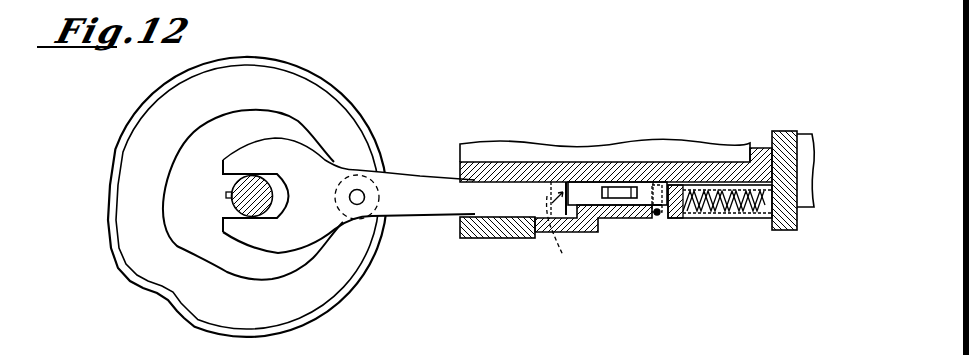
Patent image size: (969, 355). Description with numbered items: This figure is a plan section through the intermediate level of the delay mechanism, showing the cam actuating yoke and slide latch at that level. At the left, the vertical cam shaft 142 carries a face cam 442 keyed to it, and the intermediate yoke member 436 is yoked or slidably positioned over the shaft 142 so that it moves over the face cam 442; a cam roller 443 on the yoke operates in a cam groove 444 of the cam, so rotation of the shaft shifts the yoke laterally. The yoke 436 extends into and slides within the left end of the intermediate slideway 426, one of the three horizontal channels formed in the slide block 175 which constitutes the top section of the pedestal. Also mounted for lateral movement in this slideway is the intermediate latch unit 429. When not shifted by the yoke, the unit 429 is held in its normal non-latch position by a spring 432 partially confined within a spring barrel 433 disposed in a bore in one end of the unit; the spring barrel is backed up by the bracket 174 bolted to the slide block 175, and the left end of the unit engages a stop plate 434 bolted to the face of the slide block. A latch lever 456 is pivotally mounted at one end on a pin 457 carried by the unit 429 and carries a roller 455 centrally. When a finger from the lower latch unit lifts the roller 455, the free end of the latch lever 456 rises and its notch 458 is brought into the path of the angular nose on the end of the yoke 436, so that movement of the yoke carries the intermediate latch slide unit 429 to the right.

The cam shaft 142 is at (243, 199).
The bracket 174 is at (787, 142).
The slide block 175 is at (501, 160).
The intermediate slideway 426 is at (528, 178).
The intermediate unit 429 is at (598, 232).
The spring 432 is at (695, 218).
The spring barrel 433 is at (762, 220).
The stop plate 434 is at (474, 238).
The intermediate yoke member 436 is at (413, 186).
The face cam 442 is at (340, 92).
The cam roller 443 is at (339, 226).
The cam groove 444 is at (282, 79).
The roller 455 is at (621, 189).
The latch lever 456 is at (585, 186).
The pin 457 is at (658, 221).
The notch 458 is at (569, 230).